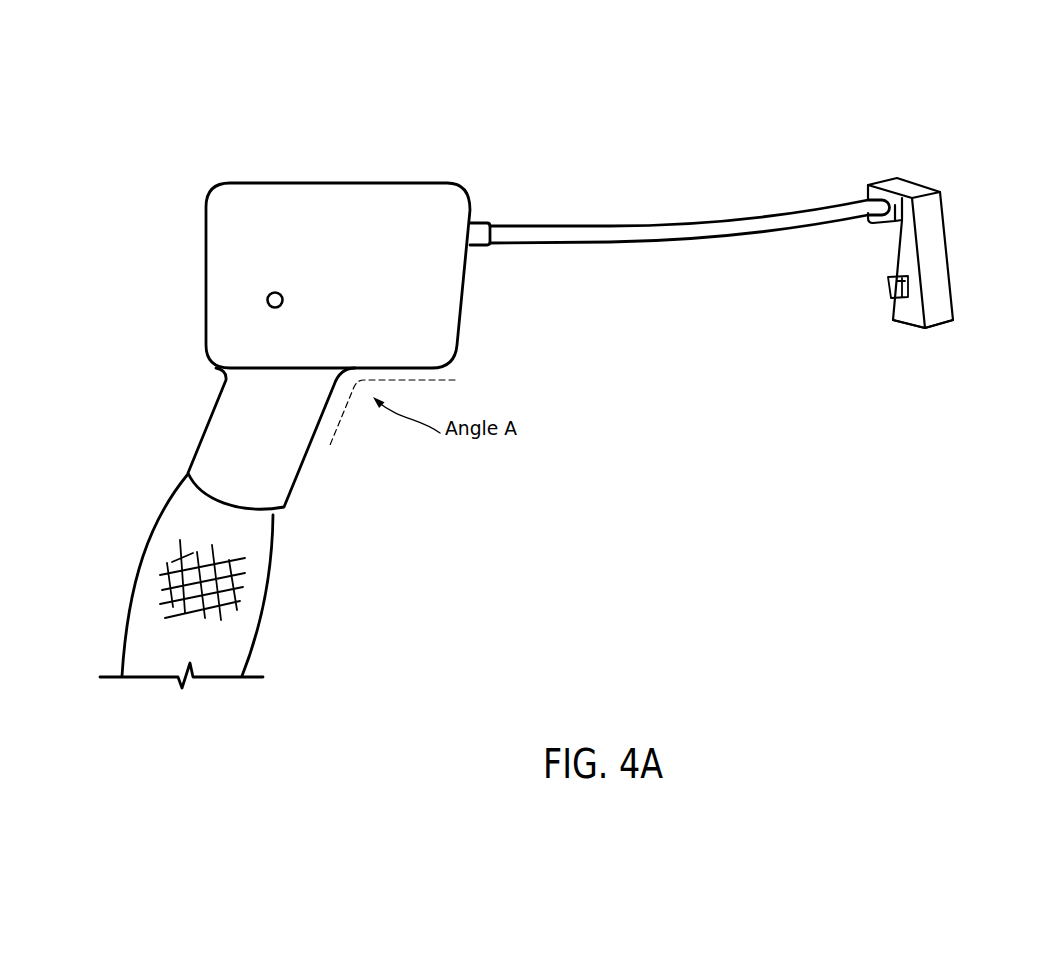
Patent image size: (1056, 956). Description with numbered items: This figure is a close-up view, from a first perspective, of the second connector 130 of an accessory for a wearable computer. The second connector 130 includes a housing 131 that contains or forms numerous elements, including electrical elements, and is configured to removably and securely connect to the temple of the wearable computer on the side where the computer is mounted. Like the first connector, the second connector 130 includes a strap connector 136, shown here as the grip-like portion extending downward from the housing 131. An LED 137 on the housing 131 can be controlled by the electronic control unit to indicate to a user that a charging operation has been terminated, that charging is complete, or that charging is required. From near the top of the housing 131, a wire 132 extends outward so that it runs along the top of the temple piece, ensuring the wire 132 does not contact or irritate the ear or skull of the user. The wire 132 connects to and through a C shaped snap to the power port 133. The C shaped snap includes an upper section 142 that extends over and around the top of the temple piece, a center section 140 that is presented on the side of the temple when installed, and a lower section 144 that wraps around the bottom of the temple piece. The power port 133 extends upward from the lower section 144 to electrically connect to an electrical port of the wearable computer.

The second connector 130 is at (493, 104).
The housing 131 is at (260, 182).
The wire 132 is at (658, 222).
The power port 133 is at (888, 277).
The strap connector 136 is at (313, 452).
The LED 137 is at (266, 303).
The center section 140 is at (950, 247).
The upper section 142 is at (913, 183).
The lower section 144 is at (937, 327).